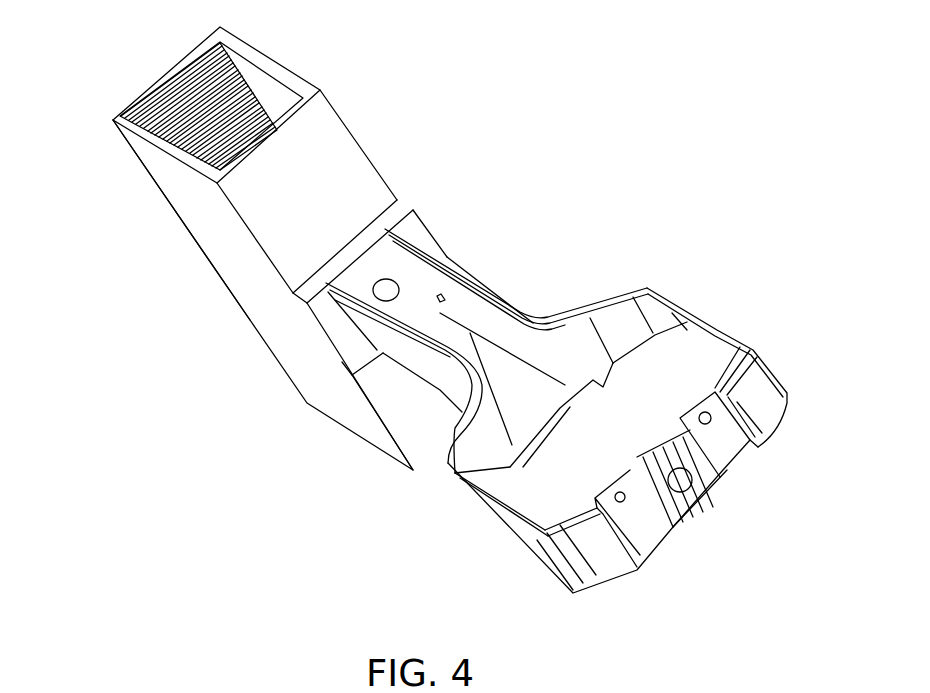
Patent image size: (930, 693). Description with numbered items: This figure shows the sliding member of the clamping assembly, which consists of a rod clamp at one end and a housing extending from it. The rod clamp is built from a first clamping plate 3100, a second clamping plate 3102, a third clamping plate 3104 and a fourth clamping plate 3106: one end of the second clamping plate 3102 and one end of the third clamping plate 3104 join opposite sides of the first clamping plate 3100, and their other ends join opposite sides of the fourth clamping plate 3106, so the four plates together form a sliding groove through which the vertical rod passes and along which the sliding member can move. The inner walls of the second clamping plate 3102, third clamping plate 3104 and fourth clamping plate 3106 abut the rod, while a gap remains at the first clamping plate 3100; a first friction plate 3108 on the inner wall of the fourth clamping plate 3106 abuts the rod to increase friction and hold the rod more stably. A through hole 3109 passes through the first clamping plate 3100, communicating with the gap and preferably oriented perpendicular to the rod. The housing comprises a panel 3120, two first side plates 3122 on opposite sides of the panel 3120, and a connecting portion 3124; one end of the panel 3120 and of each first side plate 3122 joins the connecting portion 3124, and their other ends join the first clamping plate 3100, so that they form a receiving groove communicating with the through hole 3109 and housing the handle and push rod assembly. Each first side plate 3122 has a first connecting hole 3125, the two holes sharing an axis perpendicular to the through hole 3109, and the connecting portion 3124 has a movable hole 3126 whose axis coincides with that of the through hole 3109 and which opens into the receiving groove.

The first clamping plate 3100 is at (337, 153).
The second clamping plate 3102 is at (157, 178).
The third clamping plate 3104 is at (283, 73).
The fourth clamping plate 3106 is at (159, 92).
The first friction plate 3108 is at (192, 77).
The through hole 3109 is at (387, 295).
The panel 3120 is at (523, 397).
The first side plate 3122 is at (498, 325).
The connecting portion 3124 is at (717, 373).
The first connecting hole 3125 is at (440, 300).
The movable hole 3126 is at (680, 482).